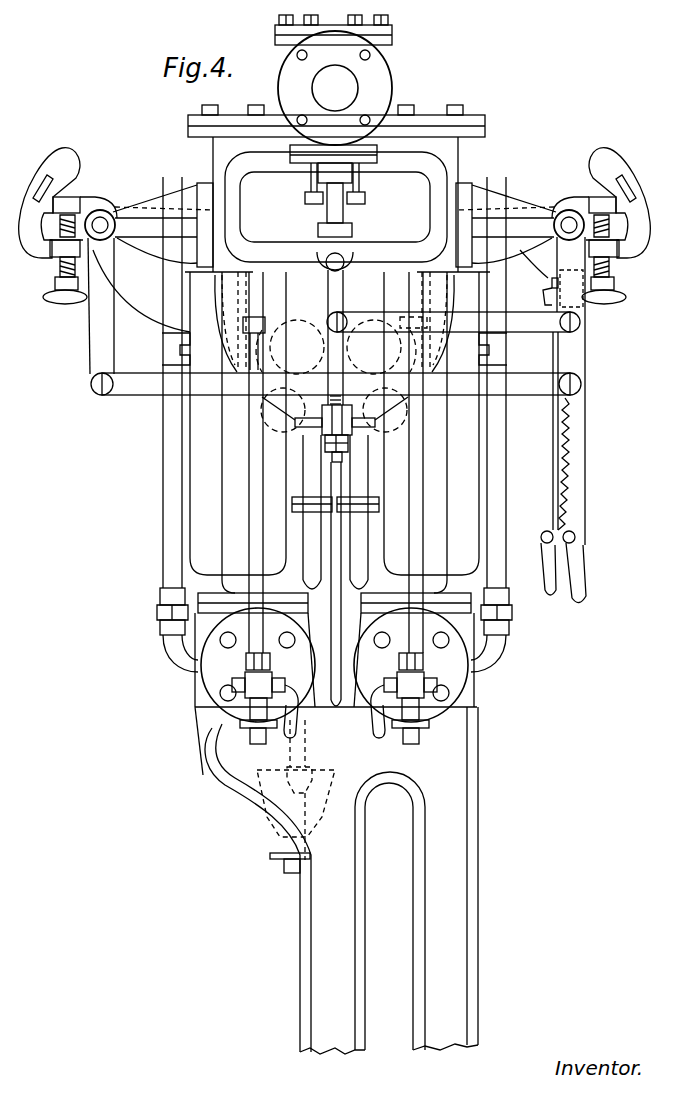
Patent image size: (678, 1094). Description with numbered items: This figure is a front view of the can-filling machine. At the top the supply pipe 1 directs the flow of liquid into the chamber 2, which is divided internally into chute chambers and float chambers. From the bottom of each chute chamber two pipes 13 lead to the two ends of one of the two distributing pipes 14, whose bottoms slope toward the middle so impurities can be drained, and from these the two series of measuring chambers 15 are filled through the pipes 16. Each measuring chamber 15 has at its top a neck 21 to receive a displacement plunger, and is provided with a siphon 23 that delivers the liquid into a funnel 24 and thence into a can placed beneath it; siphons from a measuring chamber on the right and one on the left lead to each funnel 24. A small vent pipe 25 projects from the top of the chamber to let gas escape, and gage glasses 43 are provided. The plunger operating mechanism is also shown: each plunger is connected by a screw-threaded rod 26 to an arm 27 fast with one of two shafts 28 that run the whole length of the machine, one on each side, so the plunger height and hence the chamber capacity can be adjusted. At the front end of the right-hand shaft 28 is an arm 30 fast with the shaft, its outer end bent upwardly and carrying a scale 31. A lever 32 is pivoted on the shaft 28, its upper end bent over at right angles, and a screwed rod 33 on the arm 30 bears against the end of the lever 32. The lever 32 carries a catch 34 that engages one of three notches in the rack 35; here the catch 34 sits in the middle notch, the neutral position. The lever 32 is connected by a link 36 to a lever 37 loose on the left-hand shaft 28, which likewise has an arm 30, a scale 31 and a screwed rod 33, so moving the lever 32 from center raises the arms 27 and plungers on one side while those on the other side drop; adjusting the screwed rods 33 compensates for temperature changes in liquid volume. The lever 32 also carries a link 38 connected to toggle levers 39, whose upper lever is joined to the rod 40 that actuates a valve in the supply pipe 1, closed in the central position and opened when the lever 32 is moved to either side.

The supply pipe 1 is at (356, 82).
The chamber 2 is at (213, 158).
The pipes 13 is at (220, 505).
The distributing pipes 14 is at (225, 668).
The measuring chambers 15 is at (334, 430).
The pipes 16 is at (170, 557).
The neck 21 is at (335, 323).
The siphon 23 is at (295, 316).
The funnel 24 is at (270, 810).
The vent pipe 25 is at (250, 283).
The rod 26 is at (175, 268).
The arm 27 is at (127, 207).
The shaft 28 is at (100, 227).
The arm 30 is at (30, 240).
The scale 31 is at (53, 173).
The lever 32 is at (580, 197).
The screwed rod 33 is at (52, 303).
The catch 34 is at (561, 298).
The rack 35 is at (548, 282).
The link 36 is at (132, 390).
The lever 37 is at (65, 206).
The link 38 is at (533, 331).
The toggle levers 39 is at (343, 293).
The rod 40 is at (327, 233).
The gage glasses 43 is at (255, 518).